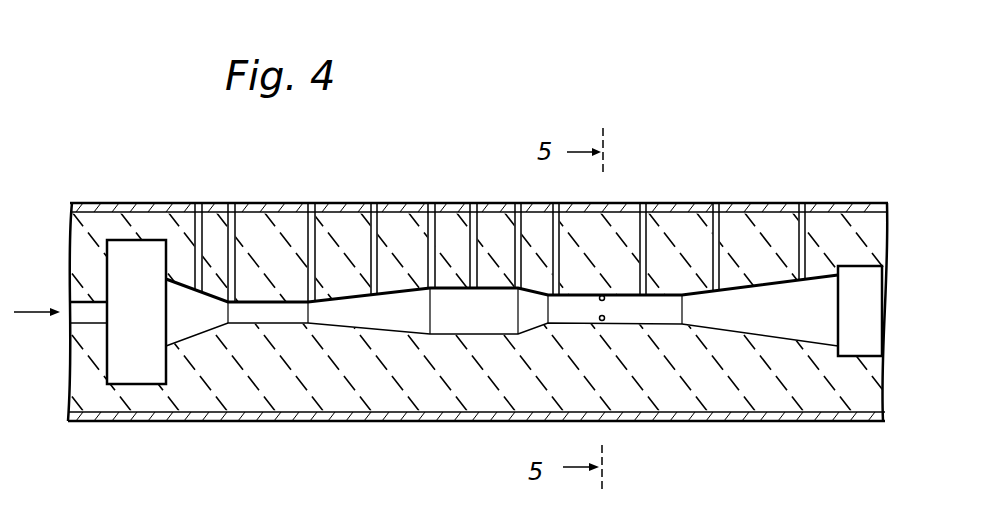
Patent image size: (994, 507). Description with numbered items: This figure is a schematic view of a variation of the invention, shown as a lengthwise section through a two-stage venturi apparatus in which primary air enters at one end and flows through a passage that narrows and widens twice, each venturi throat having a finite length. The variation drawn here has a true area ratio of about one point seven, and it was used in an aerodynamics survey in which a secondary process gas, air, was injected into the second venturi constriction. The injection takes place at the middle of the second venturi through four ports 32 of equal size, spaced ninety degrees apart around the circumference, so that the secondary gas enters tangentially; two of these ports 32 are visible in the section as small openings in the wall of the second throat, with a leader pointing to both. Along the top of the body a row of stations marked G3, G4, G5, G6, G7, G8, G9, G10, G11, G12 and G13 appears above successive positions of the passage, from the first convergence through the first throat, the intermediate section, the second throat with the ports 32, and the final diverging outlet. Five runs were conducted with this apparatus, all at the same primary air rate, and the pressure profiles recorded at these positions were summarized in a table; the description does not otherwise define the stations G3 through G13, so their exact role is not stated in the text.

The ports 32 is at (605, 316).
The groove G3 is at (191, 237).
The groove G4 is at (231, 242).
The groove G5 is at (306, 242).
The groove G6 is at (366, 238).
The groove G7 is at (424, 235).
The groove G8 is at (468, 235).
The groove G9 is at (514, 235).
The groove G10 is at (561, 238).
The groove G11 is at (644, 238).
The groove G12 is at (718, 236).
The groove G13 is at (803, 231).